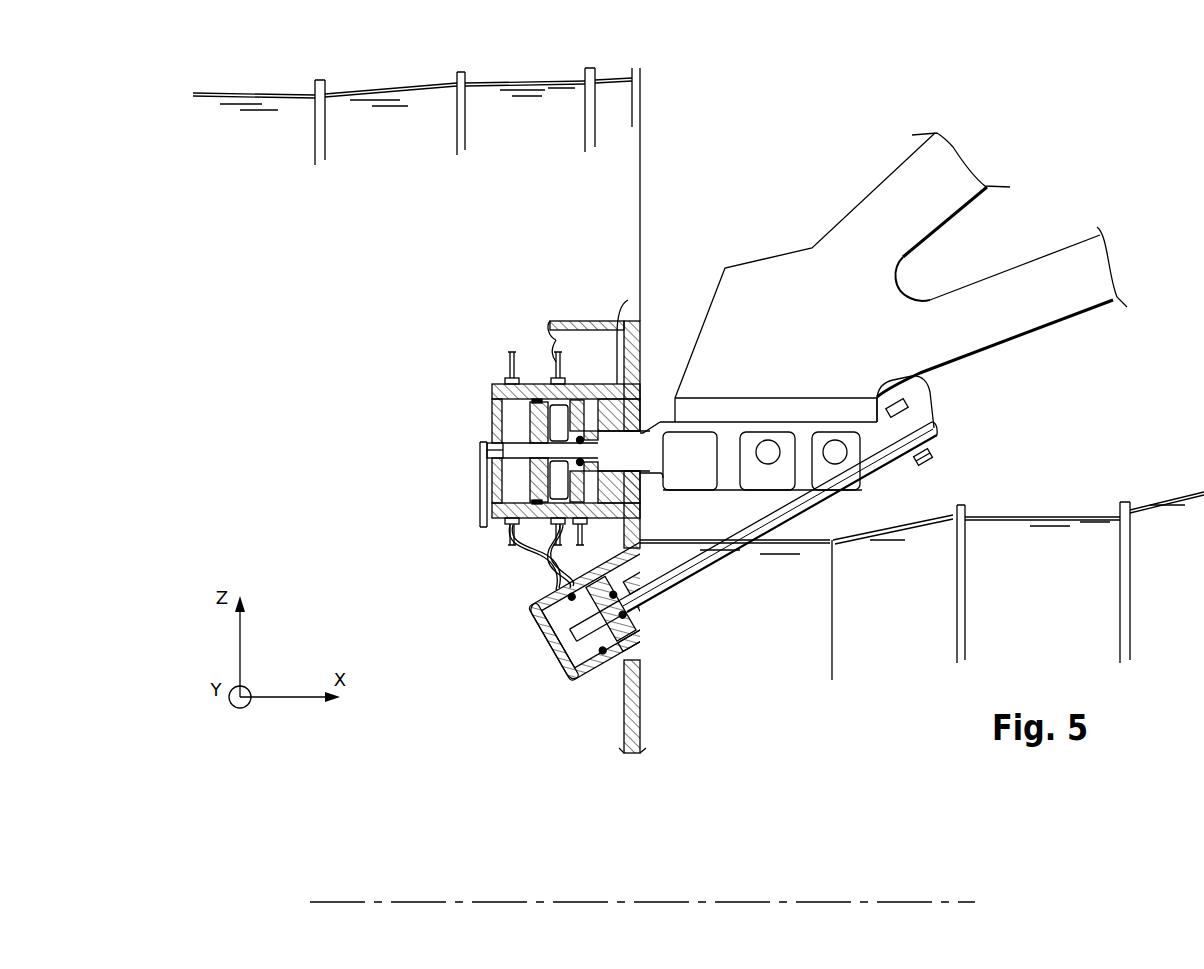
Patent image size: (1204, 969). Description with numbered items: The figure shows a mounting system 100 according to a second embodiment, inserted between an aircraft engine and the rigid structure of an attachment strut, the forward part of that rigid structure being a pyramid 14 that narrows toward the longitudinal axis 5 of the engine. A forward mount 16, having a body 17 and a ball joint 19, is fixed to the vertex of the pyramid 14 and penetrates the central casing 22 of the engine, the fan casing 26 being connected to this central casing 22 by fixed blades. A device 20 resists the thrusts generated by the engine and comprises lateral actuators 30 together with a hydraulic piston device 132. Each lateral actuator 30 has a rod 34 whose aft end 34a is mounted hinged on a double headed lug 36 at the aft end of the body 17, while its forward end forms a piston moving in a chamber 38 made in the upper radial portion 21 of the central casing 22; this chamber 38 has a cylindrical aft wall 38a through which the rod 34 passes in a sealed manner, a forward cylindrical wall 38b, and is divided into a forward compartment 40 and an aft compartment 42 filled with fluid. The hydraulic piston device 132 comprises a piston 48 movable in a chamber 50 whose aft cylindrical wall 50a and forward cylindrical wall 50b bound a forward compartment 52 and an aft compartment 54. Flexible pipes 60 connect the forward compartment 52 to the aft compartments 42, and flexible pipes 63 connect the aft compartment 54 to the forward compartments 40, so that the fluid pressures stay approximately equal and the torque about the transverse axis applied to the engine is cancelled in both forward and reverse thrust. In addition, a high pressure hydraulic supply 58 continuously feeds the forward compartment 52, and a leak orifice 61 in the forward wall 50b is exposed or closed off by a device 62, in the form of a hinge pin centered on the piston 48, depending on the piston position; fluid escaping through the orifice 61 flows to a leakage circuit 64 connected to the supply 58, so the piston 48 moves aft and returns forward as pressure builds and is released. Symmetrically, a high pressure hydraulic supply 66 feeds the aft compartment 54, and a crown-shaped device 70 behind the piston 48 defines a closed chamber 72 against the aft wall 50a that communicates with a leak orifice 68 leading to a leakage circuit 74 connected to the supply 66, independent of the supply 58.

The longitudinal axis 5 is at (838, 902).
The pyramid 14 is at (775, 265).
The forward mount 16 is at (802, 398).
The body 17 is at (714, 470).
The ball joint 19 is at (645, 418).
The device resisting thrusts 20 is at (792, 580).
The upper radial portion 21 is at (603, 322).
The central casing 22 is at (1032, 546).
The fan casing 26 is at (518, 106).
The lateral actuator 30 is at (548, 688).
The rod 34 is at (728, 550).
The aft end of the rod 34a is at (938, 430).
The double headed lug 36 is at (900, 400).
The chamber 38 is at (537, 616).
The cylindrical aft wall 38a is at (640, 616).
The forward cylindrical wall 38b is at (542, 655).
The forward compartment 40 is at (577, 655).
The aft compartment 42 is at (634, 648).
The piston 48 is at (528, 542).
The chamber 50 is at (497, 390).
The aft cylindrical wall 50a is at (622, 326).
The forward cylindrical wall 50b is at (498, 403).
The forward compartment 52 is at (506, 524).
The aft compartment 54 is at (533, 420).
The high pressure hydraulic supply 58 is at (510, 365).
The flexible pipes 60 is at (512, 540).
The leak orifice 61 is at (495, 452).
The device 62 is at (520, 447).
The flexible pipes 63 is at (533, 585).
The leakage circuit 64 is at (478, 488).
The high pressure hydraulic supply 66 is at (552, 360).
The leak orifice 68 is at (595, 470).
The device 70 is at (573, 412).
The closed chamber 72 is at (614, 494).
The leakage circuit 74 is at (642, 597).
The mounting system 100 is at (795, 162).
The hydraulic piston device 132 is at (522, 350).